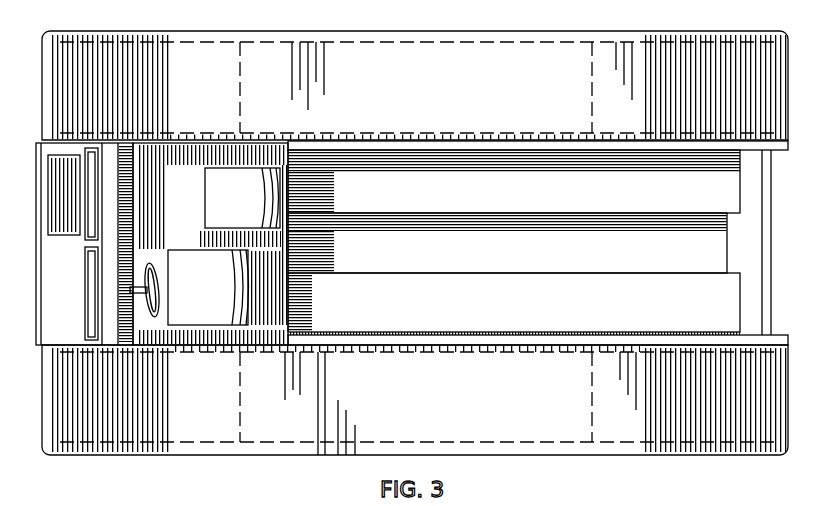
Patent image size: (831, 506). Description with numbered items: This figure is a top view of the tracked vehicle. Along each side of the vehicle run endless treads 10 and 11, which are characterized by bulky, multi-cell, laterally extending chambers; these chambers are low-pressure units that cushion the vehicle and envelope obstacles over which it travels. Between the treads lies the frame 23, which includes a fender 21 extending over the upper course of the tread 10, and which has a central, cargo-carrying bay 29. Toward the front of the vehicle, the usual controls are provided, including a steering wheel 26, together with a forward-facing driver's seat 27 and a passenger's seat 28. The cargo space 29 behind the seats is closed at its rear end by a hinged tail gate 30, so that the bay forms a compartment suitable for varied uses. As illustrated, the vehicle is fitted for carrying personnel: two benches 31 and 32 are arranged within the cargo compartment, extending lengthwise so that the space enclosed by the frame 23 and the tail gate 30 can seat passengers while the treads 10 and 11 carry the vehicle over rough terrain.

The endless tread 10 is at (408, 415).
The endless tread 11 is at (33, 56).
The fender 21 is at (474, 411).
The frame 23 is at (407, 328).
The steering wheel 26 is at (150, 262).
The driver's seat 27 is at (207, 327).
The passenger's seat 28 is at (205, 201).
The cargo-carrying bay 29 is at (428, 165).
The tail gate 30 is at (771, 253).
The bench 31 is at (514, 162).
The bench 32 is at (528, 320).